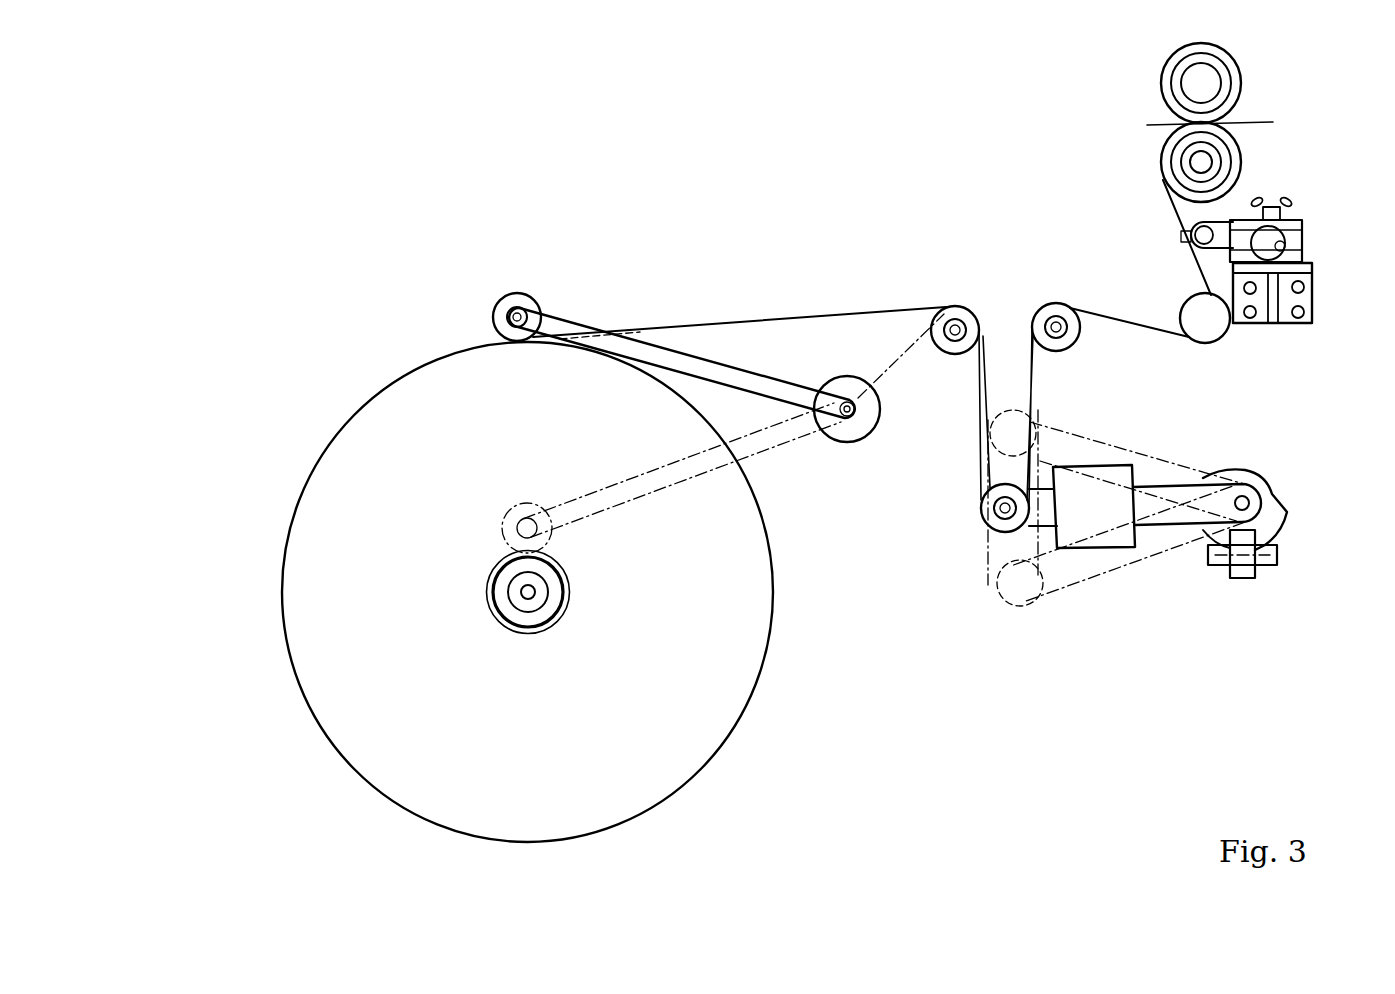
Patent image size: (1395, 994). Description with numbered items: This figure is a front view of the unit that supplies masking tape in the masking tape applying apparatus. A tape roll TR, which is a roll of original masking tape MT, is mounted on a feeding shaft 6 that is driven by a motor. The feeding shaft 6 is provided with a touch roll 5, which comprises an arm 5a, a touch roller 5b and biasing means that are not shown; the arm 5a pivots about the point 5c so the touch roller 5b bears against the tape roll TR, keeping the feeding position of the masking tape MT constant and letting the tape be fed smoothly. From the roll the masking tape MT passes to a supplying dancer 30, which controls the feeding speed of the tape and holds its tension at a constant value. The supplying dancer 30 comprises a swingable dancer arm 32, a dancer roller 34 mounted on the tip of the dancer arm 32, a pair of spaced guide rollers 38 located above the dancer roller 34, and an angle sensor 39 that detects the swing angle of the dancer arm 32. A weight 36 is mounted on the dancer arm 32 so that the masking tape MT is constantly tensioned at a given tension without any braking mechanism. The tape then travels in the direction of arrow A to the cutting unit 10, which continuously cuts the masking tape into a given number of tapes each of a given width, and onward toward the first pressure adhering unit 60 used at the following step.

The tape roll TR is at (628, 802).
The feeding shaft 6 is at (510, 637).
The touch roll 5 is at (718, 391).
The arm 5a is at (680, 352).
The touch roller 5b is at (515, 292).
The pivot roller 5c is at (851, 440).
The masking tape MT is at (850, 313).
The guide rollers 38 is at (1048, 305).
The dancer roller 34 is at (985, 530).
The weight 36 is at (1116, 548).
The supplying dancer 30 is at (1183, 534).
The dancer arm 32 is at (1183, 485).
The angle sensor 39 is at (1248, 578).
The first pressure adhering unit 60 is at (1244, 74).
The cutting unit 10 is at (1309, 247).
The direction arrow A is at (1273, 147).